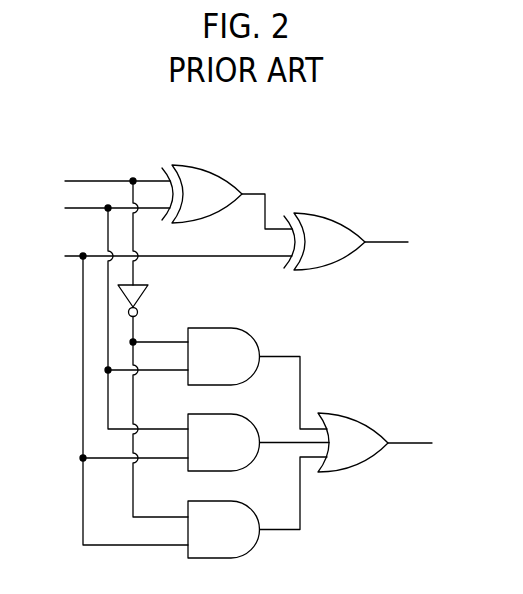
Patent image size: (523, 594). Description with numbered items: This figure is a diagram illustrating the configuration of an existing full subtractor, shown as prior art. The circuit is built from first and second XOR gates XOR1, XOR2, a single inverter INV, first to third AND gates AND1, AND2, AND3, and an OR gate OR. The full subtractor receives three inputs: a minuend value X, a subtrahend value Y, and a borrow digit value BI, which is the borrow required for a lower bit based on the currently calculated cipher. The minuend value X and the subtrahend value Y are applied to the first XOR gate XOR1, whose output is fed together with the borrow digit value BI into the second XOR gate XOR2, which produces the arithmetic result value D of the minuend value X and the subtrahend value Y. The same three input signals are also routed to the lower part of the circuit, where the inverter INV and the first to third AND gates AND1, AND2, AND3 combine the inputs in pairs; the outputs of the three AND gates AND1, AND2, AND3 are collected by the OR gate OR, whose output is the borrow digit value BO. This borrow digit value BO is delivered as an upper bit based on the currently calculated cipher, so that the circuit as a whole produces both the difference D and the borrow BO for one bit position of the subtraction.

The minuend value X is at (111, 227).
The subtrahend value Y is at (120, 313).
The borrow digit value BI is at (169, 395).
The first XOR gate XOR1 is at (201, 165).
The second XOR gate XOR2 is at (329, 213).
The arithmetic result value D is at (395, 242).
The inverter INV is at (143, 300).
The first AND gate AND1 is at (220, 328).
The second AND gate AND2 is at (220, 414).
The third AND gate AND3 is at (220, 502).
The OR gate OR is at (351, 413).
The borrow digit value BO is at (423, 443).